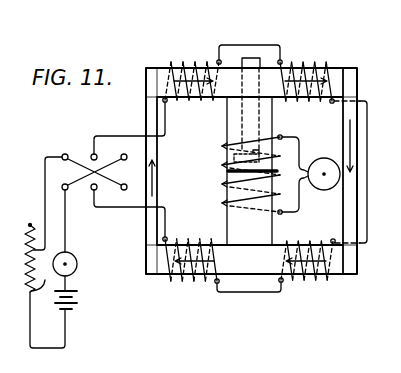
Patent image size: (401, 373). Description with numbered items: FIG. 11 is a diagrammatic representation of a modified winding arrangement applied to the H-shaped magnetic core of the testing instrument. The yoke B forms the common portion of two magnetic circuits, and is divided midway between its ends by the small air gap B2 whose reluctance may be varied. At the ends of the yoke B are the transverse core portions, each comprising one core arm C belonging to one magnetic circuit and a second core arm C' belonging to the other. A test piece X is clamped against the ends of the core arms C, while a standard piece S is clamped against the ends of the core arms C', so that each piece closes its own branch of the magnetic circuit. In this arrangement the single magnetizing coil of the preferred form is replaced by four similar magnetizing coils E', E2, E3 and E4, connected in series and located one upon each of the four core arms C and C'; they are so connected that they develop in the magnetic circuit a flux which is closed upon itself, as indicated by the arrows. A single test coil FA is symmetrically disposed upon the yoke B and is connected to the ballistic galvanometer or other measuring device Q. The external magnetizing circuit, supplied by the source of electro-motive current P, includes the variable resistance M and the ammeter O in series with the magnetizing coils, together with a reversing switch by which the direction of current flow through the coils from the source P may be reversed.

The standard piece S is at (146, 237).
The yoke B is at (249, 151).
The air gap B2 is at (228, 170).
The test coil FA is at (230, 160).
The galvanometer Q is at (323, 162).
The magnetizing coil E4 is at (192, 62).
The magnetizing coil E3 is at (322, 62).
The magnetizing coil E2 is at (181, 241).
The magnetizing coil E' is at (307, 249).
The test piece X is at (353, 172).
The core arm C' is at (149, 172).
The core arm C is at (349, 174).
The ammeter O is at (77, 267).
The source of electro-motive current P is at (76, 312).
The variable resistance M is at (36, 272).